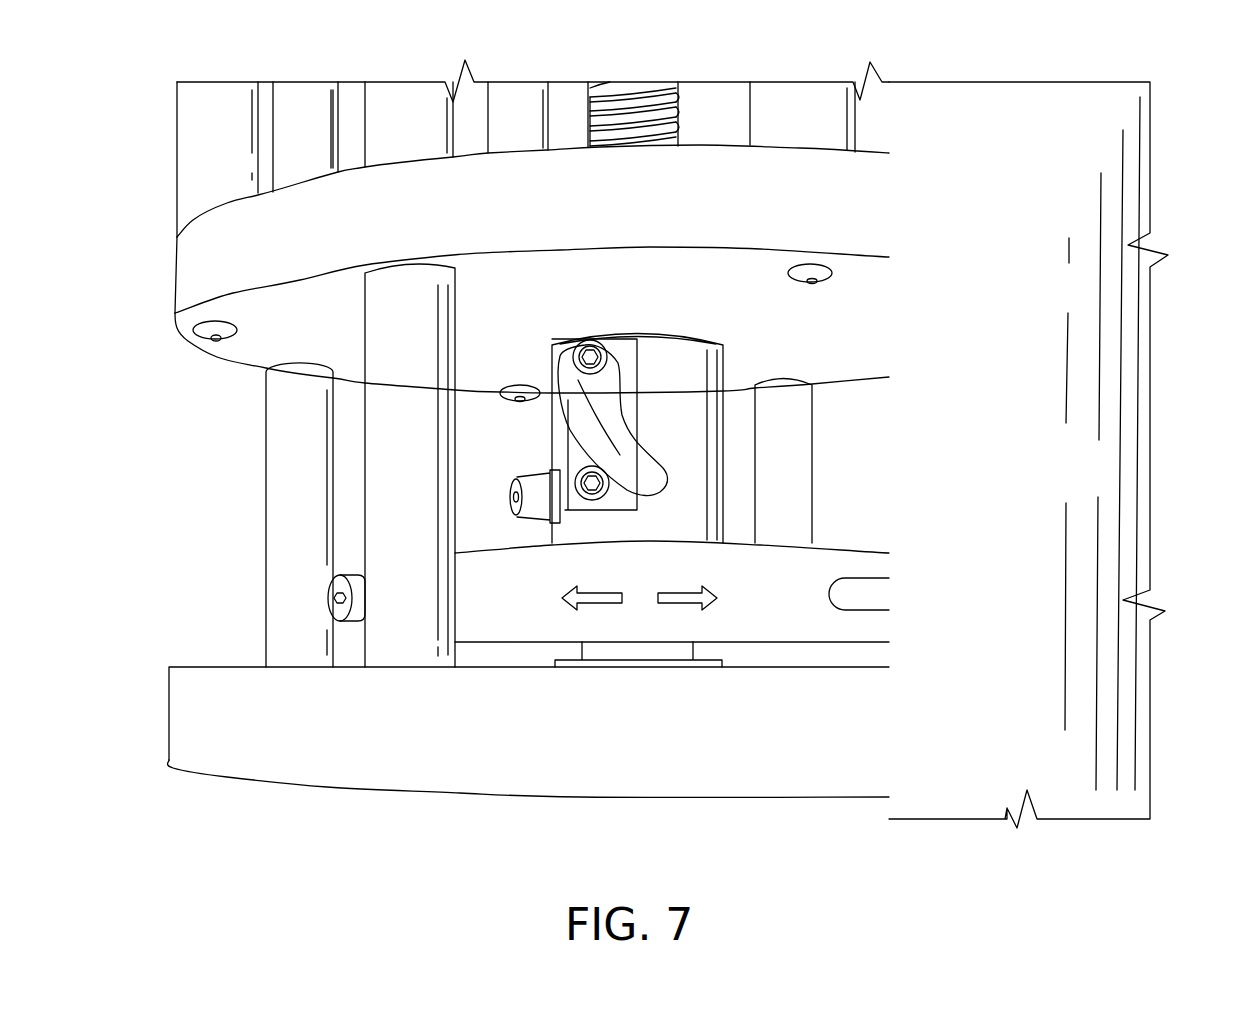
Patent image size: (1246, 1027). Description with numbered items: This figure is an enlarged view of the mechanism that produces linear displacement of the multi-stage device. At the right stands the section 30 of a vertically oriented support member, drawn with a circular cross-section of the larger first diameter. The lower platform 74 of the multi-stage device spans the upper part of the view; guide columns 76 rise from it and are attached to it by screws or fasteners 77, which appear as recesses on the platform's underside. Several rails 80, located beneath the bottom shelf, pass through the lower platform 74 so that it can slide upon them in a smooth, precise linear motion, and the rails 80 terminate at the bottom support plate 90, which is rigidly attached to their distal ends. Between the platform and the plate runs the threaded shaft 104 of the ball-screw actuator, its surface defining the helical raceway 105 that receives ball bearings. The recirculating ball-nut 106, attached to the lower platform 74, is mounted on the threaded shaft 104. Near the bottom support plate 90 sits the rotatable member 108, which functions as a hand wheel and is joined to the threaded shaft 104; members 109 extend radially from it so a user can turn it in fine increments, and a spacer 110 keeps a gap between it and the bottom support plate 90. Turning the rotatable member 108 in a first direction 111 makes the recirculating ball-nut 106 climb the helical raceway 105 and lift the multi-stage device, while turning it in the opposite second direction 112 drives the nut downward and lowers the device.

The section 30 is at (1128, 461).
The lower platform 74 is at (855, 211).
The guide columns 76 is at (190, 141).
The screws or fasteners 77 is at (812, 282).
The rails 80 is at (272, 540).
The bottom support plate 90 is at (733, 745).
The threaded shaft 104 is at (676, 93).
The helical raceway 105 is at (603, 118).
The recirculating ball-nut 106 is at (723, 434).
The rotatable member 108 is at (843, 572).
The members 109 is at (335, 612).
The spacer 110 is at (700, 653).
The first direction 111 is at (588, 606).
The second direction 112 is at (688, 590).